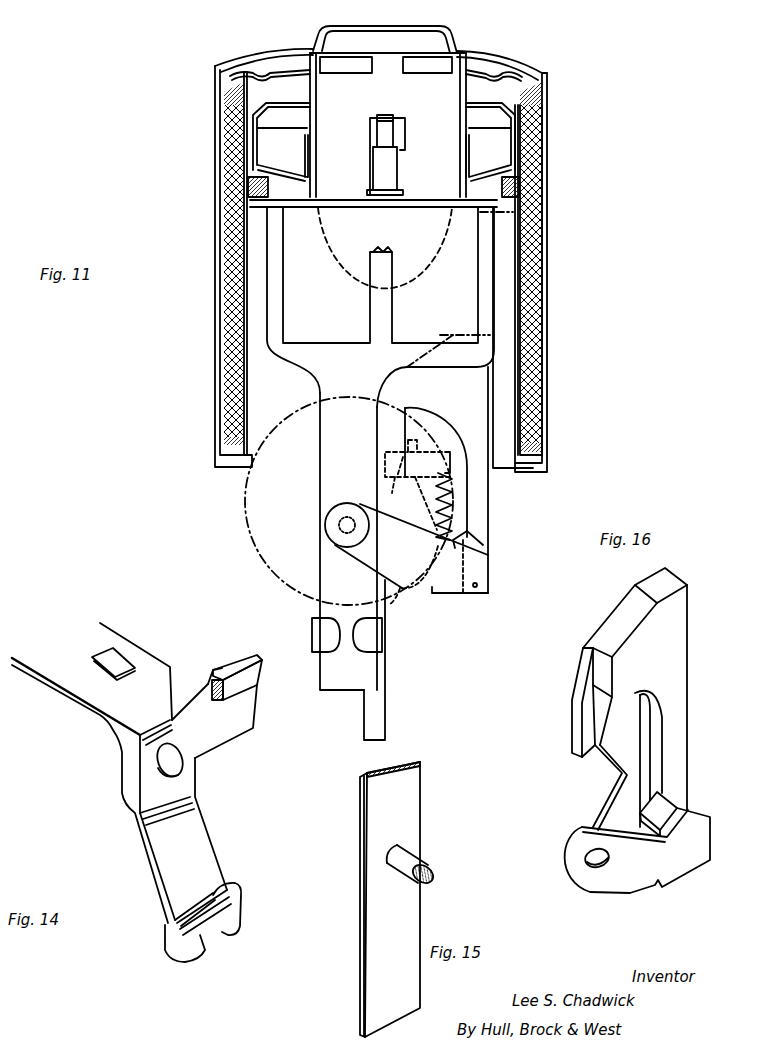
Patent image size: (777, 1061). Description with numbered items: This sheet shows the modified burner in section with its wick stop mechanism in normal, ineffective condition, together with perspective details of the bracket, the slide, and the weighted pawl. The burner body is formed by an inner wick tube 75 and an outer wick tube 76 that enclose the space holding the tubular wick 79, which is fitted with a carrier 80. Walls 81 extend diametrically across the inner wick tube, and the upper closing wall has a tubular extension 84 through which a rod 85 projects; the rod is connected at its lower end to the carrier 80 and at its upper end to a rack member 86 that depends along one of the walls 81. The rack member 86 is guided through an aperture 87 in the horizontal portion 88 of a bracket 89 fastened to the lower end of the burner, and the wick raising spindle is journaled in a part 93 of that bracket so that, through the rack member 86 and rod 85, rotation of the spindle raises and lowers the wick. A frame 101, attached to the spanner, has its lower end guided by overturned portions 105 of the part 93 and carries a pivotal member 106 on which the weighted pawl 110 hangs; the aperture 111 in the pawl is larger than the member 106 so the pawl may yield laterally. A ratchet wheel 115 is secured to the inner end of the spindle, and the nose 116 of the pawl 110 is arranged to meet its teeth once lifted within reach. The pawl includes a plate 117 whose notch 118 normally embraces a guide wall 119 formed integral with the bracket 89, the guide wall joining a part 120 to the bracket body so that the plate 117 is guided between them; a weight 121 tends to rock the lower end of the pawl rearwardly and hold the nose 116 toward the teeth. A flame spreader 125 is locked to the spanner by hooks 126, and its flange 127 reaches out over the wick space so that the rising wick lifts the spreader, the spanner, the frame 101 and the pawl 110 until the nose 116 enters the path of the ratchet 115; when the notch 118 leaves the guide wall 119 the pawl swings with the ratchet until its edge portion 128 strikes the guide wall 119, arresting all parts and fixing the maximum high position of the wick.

In FIG. 11, the inner wick tube 75 is at (244, 389).
In FIG. 11, the outer wick tube 76 is at (548, 329).
In FIG. 11, the tubular wick 79 is at (549, 177).
In FIG. 11, the wick carrier 80 is at (548, 258).
In FIG. 11, the walls 81 is at (380, 307).
In FIG. 11, the tubular extension 84 is at (392, 171).
In FIG. 11, the rod 85 is at (386, 134).
In FIG. 11, the rack member 86 is at (368, 140).
In FIG. 14, the aperture 87 is at (128, 660).
In FIG. 14, the horizontal portion 88 is at (80, 689).
In FIG. 14, the bracket 89 is at (124, 784).
In FIG. 14, the part of bracket 93 is at (186, 786).
In FIG. 11, the frame 101 is at (348, 528).
In FIG. 15, the frame 101 is at (410, 806).
In FIG. 11, the overturned portions 105 is at (316, 631).
In FIG. 14, the overturned portions 105 is at (230, 917).
In FIG. 11, the pivotal member 106 is at (336, 527).
In FIG. 15, the pivotal member 106 is at (415, 861).
In FIG. 11, the weighted pawl 110 is at (427, 586).
In FIG. 16, the weighted pawl 110 is at (677, 860).
In FIG. 16, the aperture 111 is at (592, 853).
In FIG. 11, the ratchet wheel 115 is at (258, 509).
In FIG. 11, the nose 116 is at (455, 536).
In FIG. 16, the nose 116 is at (663, 808).
In FIG. 11, the plate 117 is at (453, 491).
In FIG. 16, the plate 117 is at (638, 728).
In FIG. 11, the notch 118 is at (417, 485).
In FIG. 16, the notch 118 is at (600, 723).
In FIG. 14, the guide wall 119 is at (214, 672).
In FIG. 11, the part 120 is at (488, 385).
In FIG. 14, the part 120 is at (258, 670).
In FIG. 11, the weight 121 is at (453, 400).
In FIG. 16, the weight 121 is at (678, 643).
In FIG. 11, the flame spreader 125 is at (448, 82).
In FIG. 11, the hooks 126 is at (420, 262).
In FIG. 11, the flange 127 is at (571, 80).
In FIG. 11, the edge portion 128 is at (410, 532).
In FIG. 16, the edge portion 128 is at (607, 794).